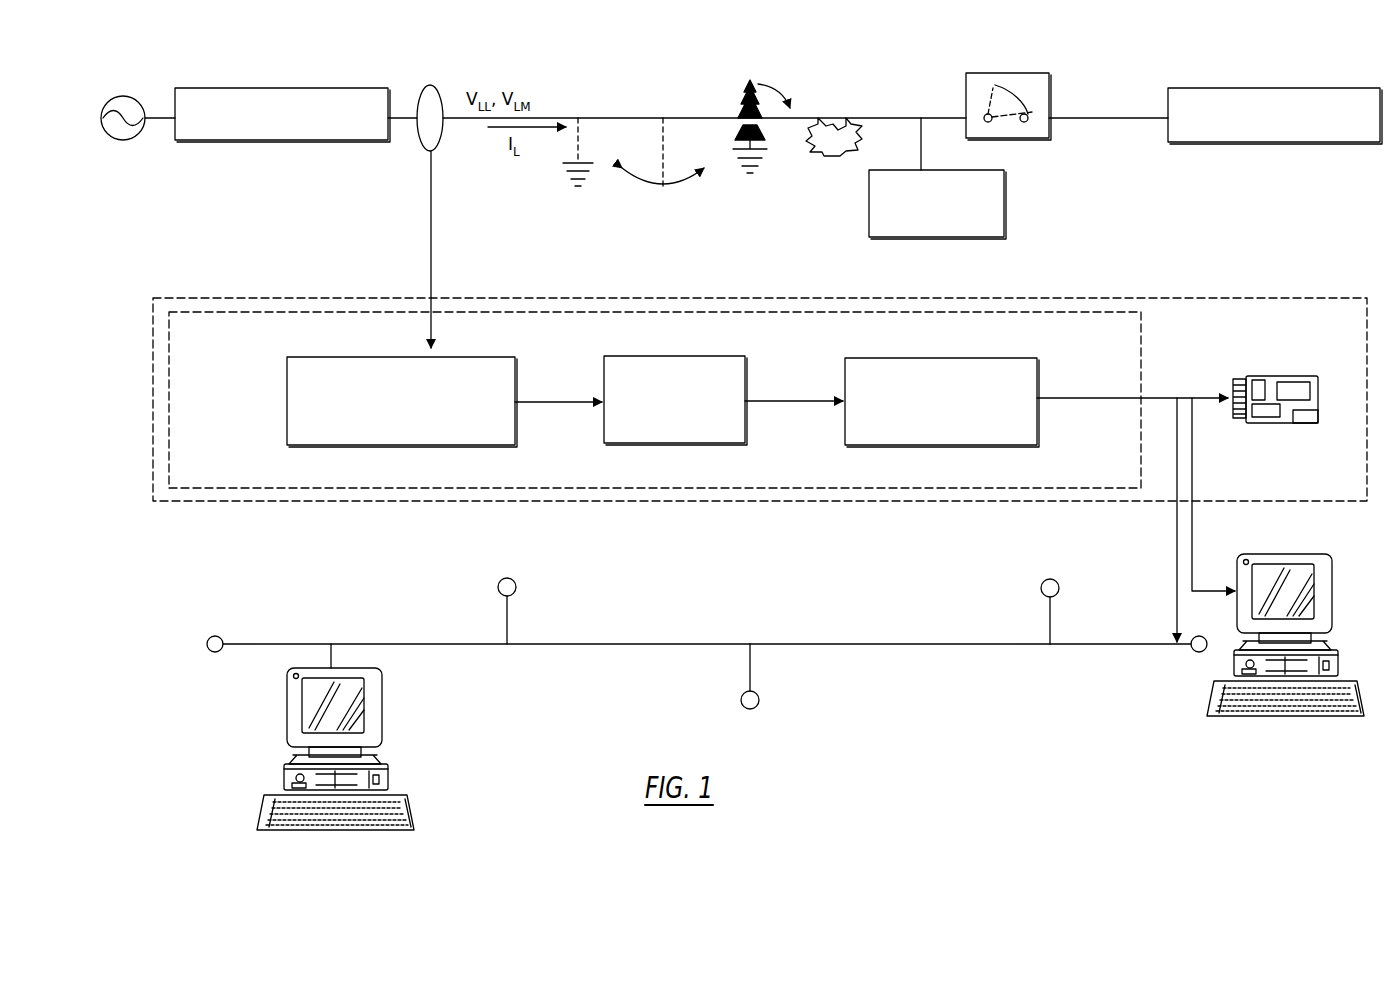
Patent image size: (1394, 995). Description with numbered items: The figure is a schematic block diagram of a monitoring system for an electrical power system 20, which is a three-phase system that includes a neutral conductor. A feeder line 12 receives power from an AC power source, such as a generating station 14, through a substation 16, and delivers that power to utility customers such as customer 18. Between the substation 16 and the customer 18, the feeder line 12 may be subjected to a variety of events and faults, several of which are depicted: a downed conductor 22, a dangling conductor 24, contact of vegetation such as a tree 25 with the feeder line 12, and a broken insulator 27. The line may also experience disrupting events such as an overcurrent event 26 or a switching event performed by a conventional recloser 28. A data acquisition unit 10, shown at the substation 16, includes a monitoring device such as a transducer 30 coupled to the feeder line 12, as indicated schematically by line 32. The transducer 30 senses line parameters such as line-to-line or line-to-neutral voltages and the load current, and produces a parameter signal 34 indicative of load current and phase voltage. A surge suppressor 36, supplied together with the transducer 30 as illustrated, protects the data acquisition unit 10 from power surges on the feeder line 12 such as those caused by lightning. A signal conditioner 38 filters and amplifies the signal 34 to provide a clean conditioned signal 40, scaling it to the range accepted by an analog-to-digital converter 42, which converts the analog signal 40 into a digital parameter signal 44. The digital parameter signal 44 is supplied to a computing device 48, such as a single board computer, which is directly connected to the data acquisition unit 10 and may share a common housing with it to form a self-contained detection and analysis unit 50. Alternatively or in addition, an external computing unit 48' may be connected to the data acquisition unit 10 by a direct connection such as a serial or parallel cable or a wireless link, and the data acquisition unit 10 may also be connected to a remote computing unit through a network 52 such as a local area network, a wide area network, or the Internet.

The data acquisition unit 10 is at (1141, 352).
The feeder line 12 is at (410, 120).
The generating station 14 is at (123, 142).
The substation 16 is at (212, 143).
The customer 18 is at (1222, 144).
The power system 20 is at (224, 236).
The downed conductor 22 is at (560, 150).
The dangling conductor 24 is at (657, 190).
The tree 25 is at (740, 93).
The overcurrent event 26 is at (1006, 224).
The broken insulator 27 is at (833, 162).
The recloser 28 is at (1018, 140).
The transducer 30 is at (350, 402).
The line 32 is at (430, 222).
The signal 34 is at (560, 408).
The surge suppressor 36 is at (287, 413).
The signal conditioner 38 is at (670, 356).
The conditioned signal 40 is at (815, 404).
The analog-to-digital converter 42 is at (893, 446).
The digital parameter signal 44 is at (1069, 398).
The computing device 48 is at (1291, 370).
The external computing unit 48' is at (1292, 631).
The detection and analysis unit 50 is at (308, 501).
The network 52 is at (787, 672).